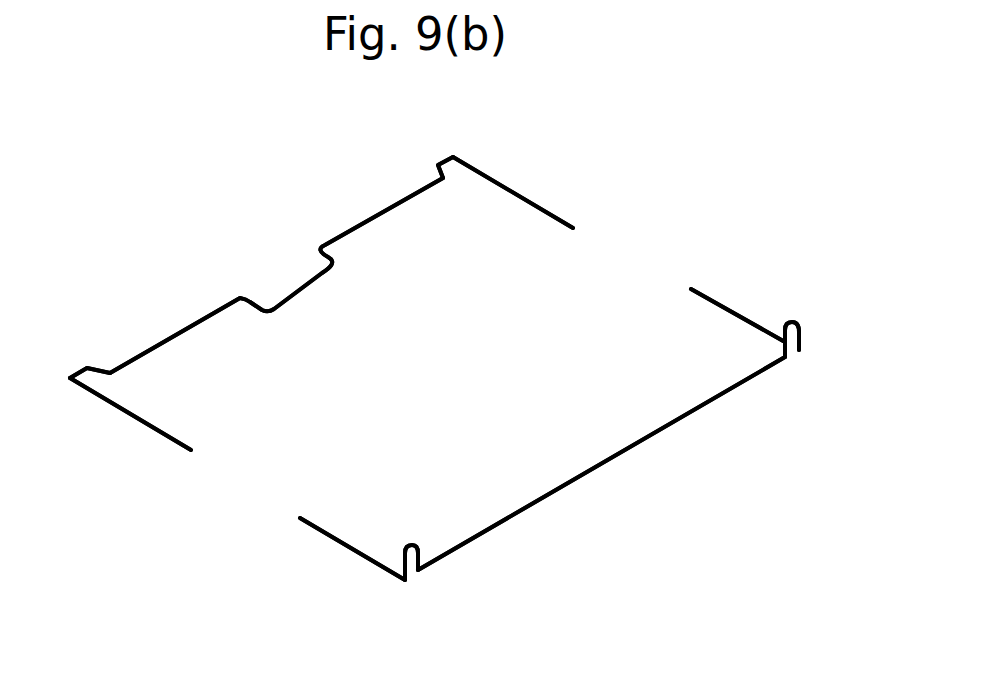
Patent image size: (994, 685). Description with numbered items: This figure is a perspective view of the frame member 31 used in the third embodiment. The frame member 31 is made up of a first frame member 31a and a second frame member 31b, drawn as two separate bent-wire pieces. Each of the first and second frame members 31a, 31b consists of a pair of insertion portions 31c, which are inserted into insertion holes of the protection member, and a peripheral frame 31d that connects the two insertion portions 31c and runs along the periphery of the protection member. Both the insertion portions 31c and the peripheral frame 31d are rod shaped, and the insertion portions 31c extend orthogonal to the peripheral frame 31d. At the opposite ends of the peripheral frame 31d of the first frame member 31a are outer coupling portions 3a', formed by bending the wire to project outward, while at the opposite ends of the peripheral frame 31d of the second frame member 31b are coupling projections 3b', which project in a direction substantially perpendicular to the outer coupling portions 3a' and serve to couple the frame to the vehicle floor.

The frame member 31 is at (830, 93).
The first frame member 31a is at (574, 171).
The second frame member 31b is at (757, 279).
The insertion portion 31c is at (530, 207).
The peripheral frame 31d is at (340, 240).
The outer coupling portion 3a' is at (261, 237).
The coupling projection 3b' is at (632, 418).